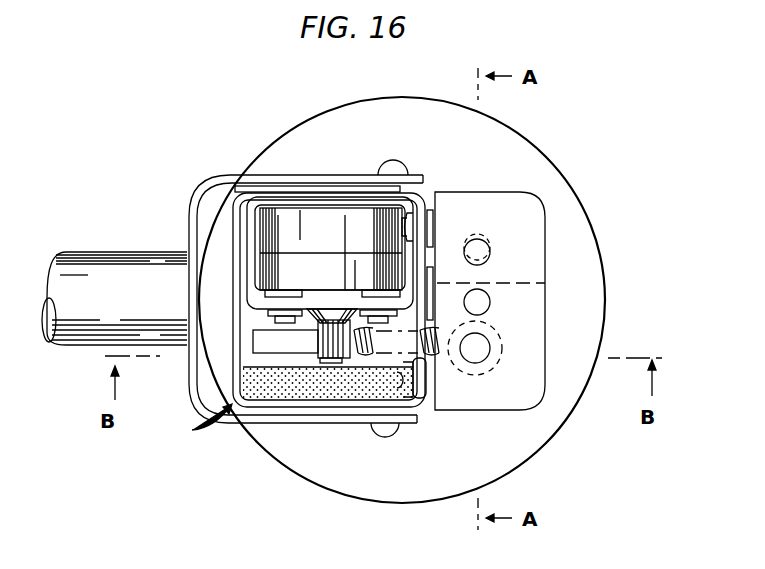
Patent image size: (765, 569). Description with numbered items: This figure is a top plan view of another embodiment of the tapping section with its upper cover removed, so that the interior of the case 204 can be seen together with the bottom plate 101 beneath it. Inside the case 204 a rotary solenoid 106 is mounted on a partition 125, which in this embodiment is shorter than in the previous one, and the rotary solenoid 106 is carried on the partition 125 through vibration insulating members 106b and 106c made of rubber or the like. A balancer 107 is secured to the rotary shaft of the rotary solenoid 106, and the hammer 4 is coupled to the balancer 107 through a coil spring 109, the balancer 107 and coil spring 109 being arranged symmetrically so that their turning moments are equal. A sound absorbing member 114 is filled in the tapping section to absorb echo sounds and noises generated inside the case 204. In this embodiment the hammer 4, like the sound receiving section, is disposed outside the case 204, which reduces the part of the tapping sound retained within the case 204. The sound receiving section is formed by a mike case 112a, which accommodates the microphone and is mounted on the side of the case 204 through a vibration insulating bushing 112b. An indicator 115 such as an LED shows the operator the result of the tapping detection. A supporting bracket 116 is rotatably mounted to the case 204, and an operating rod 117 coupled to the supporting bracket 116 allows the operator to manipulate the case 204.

The hammer 4 is at (496, 345).
The bottom plate 101 is at (414, 478).
The rotary solenoid 106 is at (332, 220).
The vibration insulating member 106b is at (292, 252).
The vibration insulating member 106c is at (385, 250).
The balancer 107 is at (280, 348).
The coil spring 109 is at (365, 360).
The mike case 112a is at (542, 196).
The vibration insulating bushing 112b is at (435, 224).
The sound absorbing member 114 is at (312, 386).
The indicator 115 is at (490, 302).
The supporting bracket 116 is at (211, 186).
The operating rod 117 is at (133, 253).
The partition 125 is at (258, 336).
The case 204 is at (198, 428).